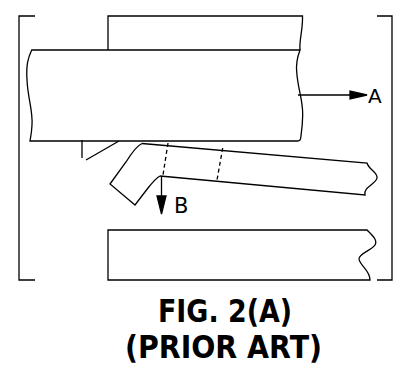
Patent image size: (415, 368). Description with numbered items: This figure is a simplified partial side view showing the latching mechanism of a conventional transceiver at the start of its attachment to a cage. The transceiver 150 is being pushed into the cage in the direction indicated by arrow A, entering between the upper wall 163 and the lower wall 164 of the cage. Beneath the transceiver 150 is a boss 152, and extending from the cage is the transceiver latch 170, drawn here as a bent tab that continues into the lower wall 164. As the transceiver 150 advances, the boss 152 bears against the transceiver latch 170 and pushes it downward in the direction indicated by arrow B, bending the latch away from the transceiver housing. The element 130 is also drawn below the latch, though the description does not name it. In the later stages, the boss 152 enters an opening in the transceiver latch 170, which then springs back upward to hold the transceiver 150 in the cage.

The disk 130 is at (238, 260).
The transceiver 150 is at (183, 102).
The boss 152 is at (81, 158).
The upper wall 163 is at (287, 30).
The lower wall 164 is at (367, 161).
The transceiver latch 170 is at (124, 178).